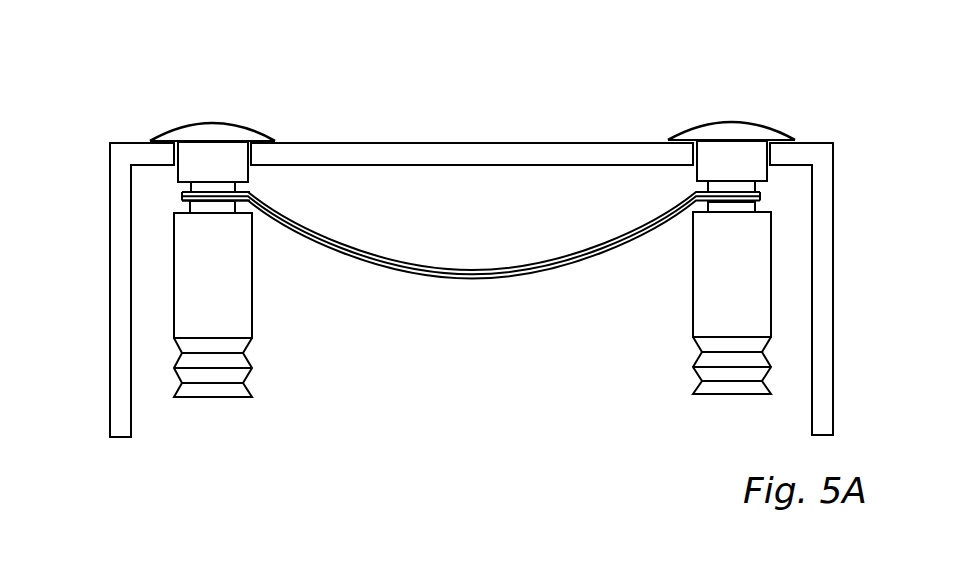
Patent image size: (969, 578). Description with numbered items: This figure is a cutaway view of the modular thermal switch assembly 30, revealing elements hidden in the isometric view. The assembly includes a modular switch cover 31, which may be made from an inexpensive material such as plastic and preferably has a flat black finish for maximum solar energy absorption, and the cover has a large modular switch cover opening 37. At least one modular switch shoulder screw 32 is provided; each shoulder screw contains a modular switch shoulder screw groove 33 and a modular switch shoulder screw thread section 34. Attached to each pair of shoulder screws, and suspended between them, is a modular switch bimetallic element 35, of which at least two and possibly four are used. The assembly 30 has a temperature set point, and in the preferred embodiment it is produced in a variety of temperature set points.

The modular thermal switch assembly 30 is at (490, 354).
The modular switch cover 31 is at (128, 143).
The modular switch shoulder screw 32 is at (235, 124).
The modular switch shoulder screw groove 33 is at (242, 208).
The modular switch shoulder screw thread section 34 is at (252, 377).
The modular switch bimetallic element 35 is at (572, 265).
The modular switch cover opening 37 is at (525, 143).